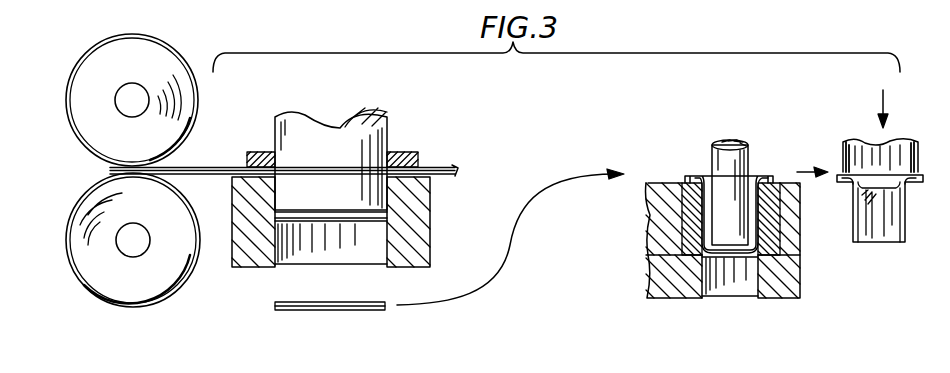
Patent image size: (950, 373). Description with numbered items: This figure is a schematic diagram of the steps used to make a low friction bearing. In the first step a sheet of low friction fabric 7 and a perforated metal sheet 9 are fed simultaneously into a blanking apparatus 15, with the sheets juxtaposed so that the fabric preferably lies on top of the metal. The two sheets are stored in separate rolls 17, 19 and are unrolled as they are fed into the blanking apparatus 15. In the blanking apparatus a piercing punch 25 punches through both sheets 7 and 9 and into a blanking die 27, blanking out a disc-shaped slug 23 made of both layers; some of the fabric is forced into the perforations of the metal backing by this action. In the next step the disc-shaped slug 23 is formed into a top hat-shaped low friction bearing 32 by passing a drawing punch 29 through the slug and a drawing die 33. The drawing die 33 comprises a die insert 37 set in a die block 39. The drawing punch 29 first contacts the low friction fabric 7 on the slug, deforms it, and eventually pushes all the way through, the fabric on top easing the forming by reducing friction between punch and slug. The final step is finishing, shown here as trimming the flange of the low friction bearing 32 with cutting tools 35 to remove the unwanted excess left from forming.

The sheet of low friction fabric 7 is at (200, 167).
The perforated metal sheet 9 is at (200, 174).
The blanking apparatus 15 is at (356, 165).
The roll 17 is at (100, 63).
The roll 19 is at (97, 277).
The disc-shaped slug 23 is at (357, 314).
The piercing punch 25 is at (307, 140).
The blanking die 27 is at (417, 233).
The drawing punch 29 is at (694, 215).
The top hat-shaped low friction bearing 32 is at (903, 185).
The drawing die 33 is at (714, 214).
The cutting tools 35 is at (843, 157).
The die insert 37 is at (775, 240).
The die block 39 is at (778, 282).